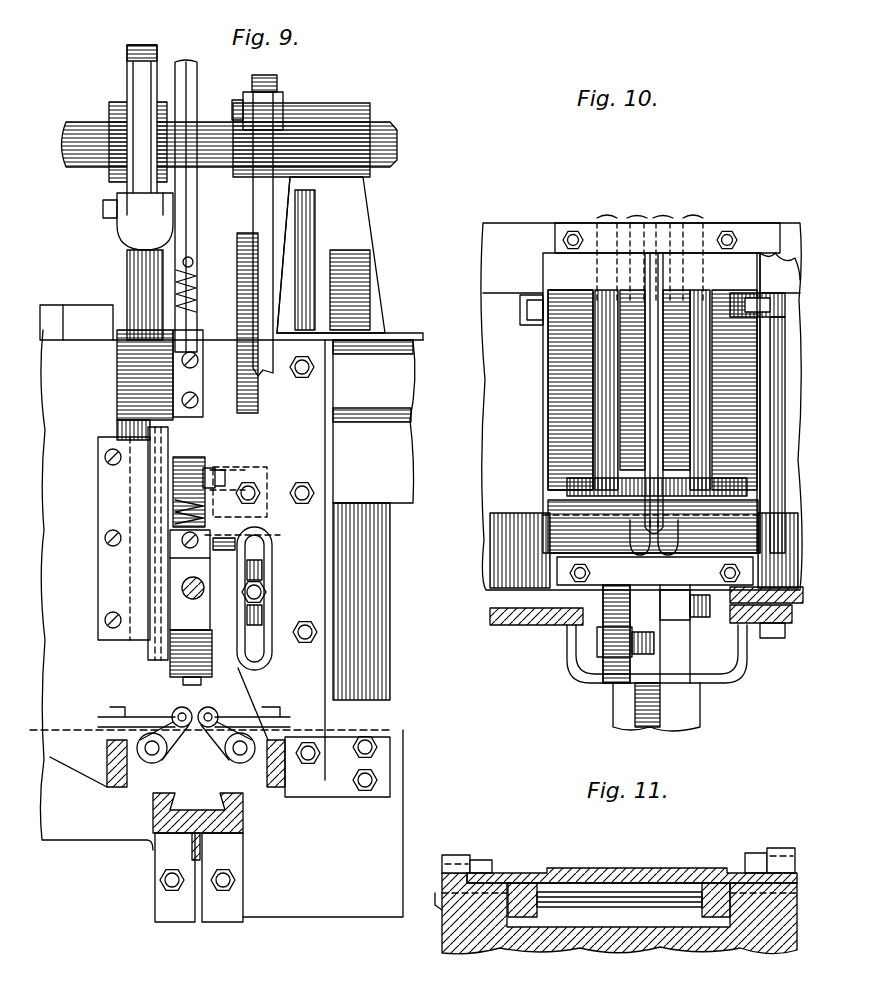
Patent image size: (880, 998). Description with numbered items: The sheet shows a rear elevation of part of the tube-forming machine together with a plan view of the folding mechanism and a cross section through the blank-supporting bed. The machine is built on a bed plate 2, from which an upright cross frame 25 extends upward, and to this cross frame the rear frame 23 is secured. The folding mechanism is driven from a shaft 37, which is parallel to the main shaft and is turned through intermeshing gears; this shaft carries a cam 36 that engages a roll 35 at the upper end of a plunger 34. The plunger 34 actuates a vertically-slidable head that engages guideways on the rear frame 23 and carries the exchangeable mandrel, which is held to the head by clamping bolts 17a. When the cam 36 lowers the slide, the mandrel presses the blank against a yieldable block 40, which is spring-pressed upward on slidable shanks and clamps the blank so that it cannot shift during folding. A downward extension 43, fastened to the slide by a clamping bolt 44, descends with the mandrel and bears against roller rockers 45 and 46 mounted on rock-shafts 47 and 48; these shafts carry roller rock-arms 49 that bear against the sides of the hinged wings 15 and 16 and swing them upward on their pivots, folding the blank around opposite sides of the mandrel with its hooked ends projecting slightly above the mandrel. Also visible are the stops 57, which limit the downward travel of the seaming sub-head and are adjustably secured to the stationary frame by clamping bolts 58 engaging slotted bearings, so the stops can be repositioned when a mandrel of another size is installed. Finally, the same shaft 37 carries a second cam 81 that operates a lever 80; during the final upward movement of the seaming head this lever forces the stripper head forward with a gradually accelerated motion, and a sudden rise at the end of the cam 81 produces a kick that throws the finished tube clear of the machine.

In FIG. 9, the bed plate 2 is at (278, 826).
In FIG. 10, the hinged wing 15 is at (768, 405).
In FIG. 11, the hinged wing 15 is at (633, 866).
In FIG. 10, the hinged wing 16 is at (547, 383).
In FIG. 9, the clamping bolts 17a is at (210, 477).
In FIG. 9, the rear frame 23 is at (63, 305).
In FIG. 9, the upright cross frame 25 is at (373, 278).
In FIG. 9, the plunger 34 is at (136, 270).
In FIG. 9, the roll 35 is at (115, 210).
In FIG. 9, the cam 36 is at (126, 72).
In FIG. 9, the shaft 37 is at (388, 136).
In FIG. 10, the yieldable block 40 is at (655, 403).
In FIG. 9, the downward extension 43 is at (177, 652).
In FIG. 9, the clamping bolt 44 is at (235, 543).
In FIG. 9, the roller rocker 45 is at (218, 715).
In FIG. 10, the roller rocker 45 is at (683, 623).
In FIG. 9, the roller rocker 46 is at (177, 707).
In FIG. 10, the roller rocker 46 is at (628, 657).
In FIG. 10, the rock-shaft 47 is at (697, 218).
In FIG. 11, the rock-shaft 47 is at (617, 907).
In FIG. 10, the rock-shaft 48 is at (605, 218).
In FIG. 10, the roller rock-arms 49 is at (752, 292).
In FIG. 9, the stops 57 is at (318, 605).
In FIG. 9, the clamping bolts 58 is at (262, 580).
In FIG. 9, the lever 80 is at (272, 207).
In FIG. 9, the cam 81 is at (285, 78).